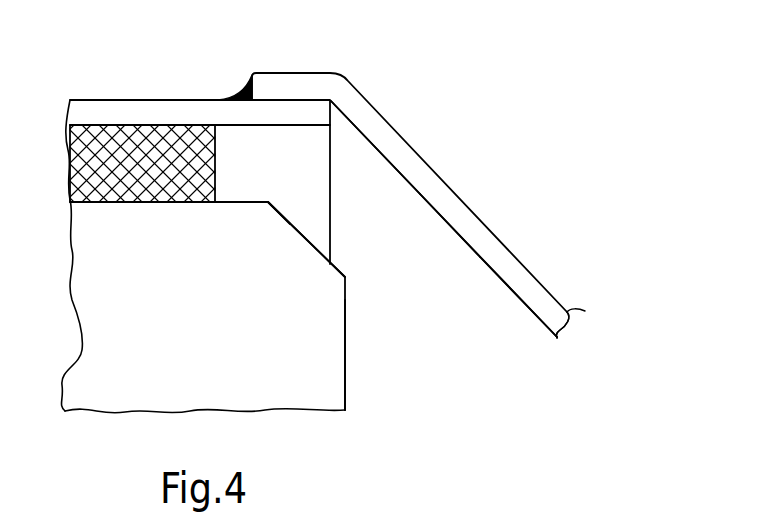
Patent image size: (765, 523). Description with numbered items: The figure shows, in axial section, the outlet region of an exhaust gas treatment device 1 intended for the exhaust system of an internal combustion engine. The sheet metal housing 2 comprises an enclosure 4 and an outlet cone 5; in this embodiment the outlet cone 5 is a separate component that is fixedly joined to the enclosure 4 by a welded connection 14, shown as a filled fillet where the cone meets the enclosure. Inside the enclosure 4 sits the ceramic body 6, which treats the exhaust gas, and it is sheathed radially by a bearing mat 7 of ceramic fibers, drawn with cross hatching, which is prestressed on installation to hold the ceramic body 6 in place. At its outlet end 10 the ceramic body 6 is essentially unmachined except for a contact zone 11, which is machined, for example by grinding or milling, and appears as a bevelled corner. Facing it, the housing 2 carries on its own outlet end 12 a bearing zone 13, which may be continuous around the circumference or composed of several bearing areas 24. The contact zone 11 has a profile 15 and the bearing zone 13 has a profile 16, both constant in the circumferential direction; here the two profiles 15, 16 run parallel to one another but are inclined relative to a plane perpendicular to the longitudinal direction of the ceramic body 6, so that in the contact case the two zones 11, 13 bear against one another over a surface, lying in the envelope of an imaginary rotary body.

The exhaust gas treatment device 1 is at (534, 130).
The housing 2 is at (98, 92).
The enclosure 4 is at (140, 117).
The outlet cone 5 is at (503, 258).
The ceramic body 6 is at (110, 316).
The bearing mat 7 is at (128, 172).
The outlet end 10 is at (347, 380).
The contact zone 11 is at (306, 221).
The outlet end 12 is at (540, 326).
The bearing zone 13 is at (438, 232).
The welded connection 14 is at (236, 82).
The profile 15 is at (288, 219).
The bearing zone profile 16 is at (476, 254).
The bearing area 24 is at (418, 194).